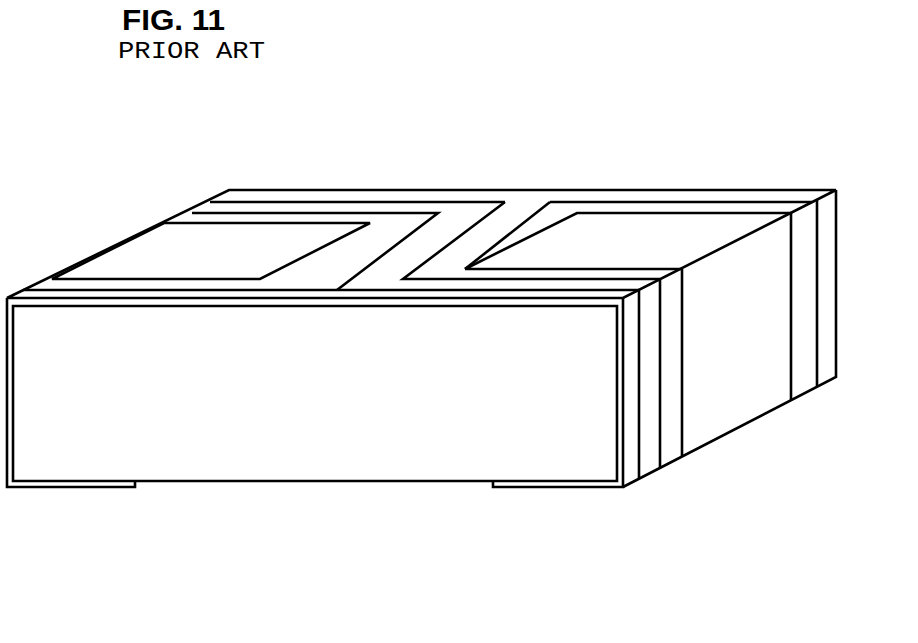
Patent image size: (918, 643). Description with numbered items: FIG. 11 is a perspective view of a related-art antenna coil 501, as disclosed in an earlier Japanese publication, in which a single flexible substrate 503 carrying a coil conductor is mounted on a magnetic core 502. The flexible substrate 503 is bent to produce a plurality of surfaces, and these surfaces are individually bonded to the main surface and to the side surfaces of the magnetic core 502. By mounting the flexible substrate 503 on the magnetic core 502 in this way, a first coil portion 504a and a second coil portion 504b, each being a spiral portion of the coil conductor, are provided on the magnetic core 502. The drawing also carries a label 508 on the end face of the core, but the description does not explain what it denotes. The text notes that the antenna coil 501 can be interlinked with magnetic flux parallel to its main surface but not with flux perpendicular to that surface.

The antenna coil 501 is at (105, 71).
The magnetic core 502 is at (380, 443).
The flexible substrate 503 is at (361, 189).
The first coil portion 504a is at (180, 290).
The second coil portion 504b is at (630, 213).
The terminal electrode on end face 508 is at (719, 372).